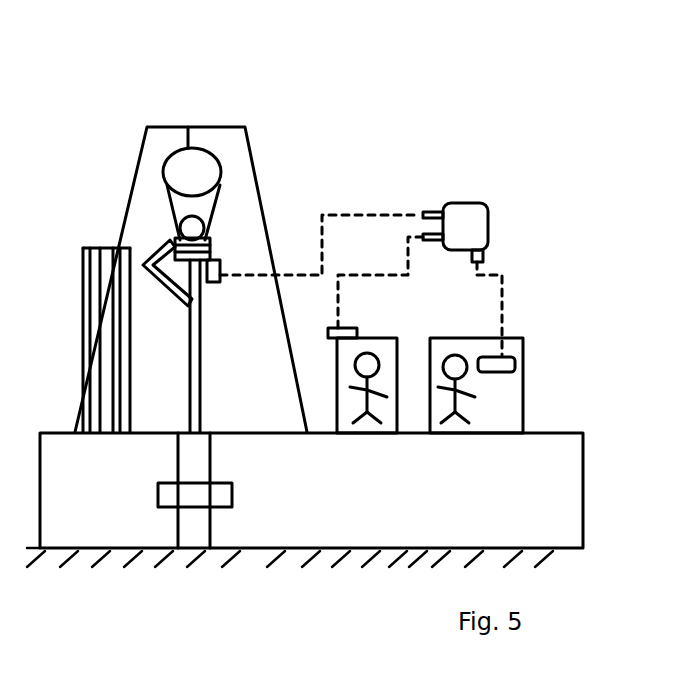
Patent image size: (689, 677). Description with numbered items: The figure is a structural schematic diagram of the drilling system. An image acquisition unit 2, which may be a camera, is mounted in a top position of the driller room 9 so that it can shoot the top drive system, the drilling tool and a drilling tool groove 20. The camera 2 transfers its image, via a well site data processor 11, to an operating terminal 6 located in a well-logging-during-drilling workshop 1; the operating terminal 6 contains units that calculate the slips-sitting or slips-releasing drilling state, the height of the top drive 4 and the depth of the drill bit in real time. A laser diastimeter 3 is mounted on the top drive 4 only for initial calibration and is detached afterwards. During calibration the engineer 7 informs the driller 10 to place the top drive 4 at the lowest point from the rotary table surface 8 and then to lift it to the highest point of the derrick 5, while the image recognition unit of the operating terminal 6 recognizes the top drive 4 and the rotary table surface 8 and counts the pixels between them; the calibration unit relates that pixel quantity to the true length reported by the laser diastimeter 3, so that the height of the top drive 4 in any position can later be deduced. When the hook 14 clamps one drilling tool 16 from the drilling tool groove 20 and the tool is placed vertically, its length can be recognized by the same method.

The well-logging-during-drilling workshop 1 is at (497, 358).
The image acquisition unit 2 is at (371, 312).
The laser diastimeter 3 is at (282, 224).
The top drive 4 is at (259, 180).
The derrick 5 is at (191, 244).
The operating terminal 6 is at (537, 347).
The engineer 7 is at (523, 361).
The rotary table surface 8 is at (311, 490).
The driller room 9 is at (378, 367).
The driller 10 is at (387, 375).
The well site data processor 11 is at (490, 218).
The hook 14 is at (170, 242).
The drilling tool 16 is at (100, 342).
The drilling tool groove 20 is at (85, 248).